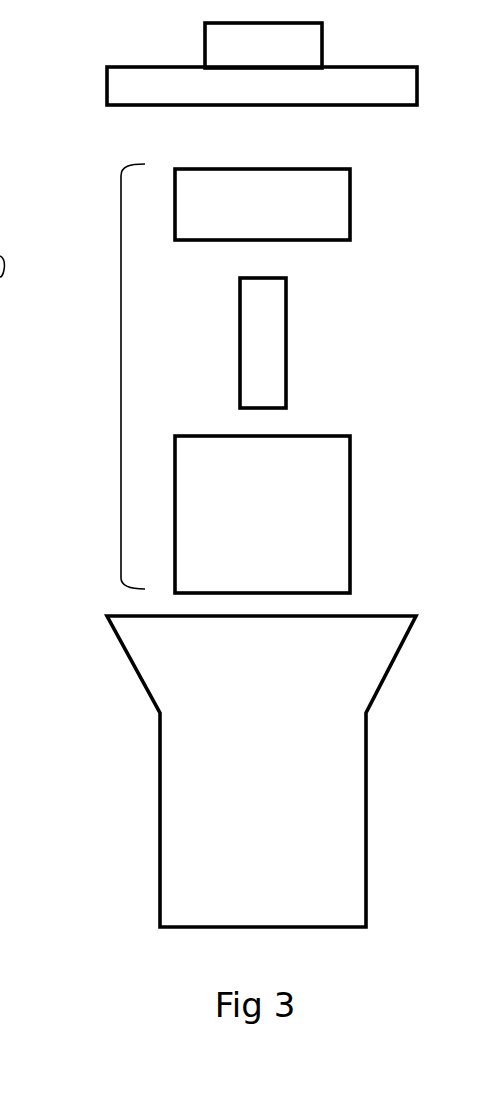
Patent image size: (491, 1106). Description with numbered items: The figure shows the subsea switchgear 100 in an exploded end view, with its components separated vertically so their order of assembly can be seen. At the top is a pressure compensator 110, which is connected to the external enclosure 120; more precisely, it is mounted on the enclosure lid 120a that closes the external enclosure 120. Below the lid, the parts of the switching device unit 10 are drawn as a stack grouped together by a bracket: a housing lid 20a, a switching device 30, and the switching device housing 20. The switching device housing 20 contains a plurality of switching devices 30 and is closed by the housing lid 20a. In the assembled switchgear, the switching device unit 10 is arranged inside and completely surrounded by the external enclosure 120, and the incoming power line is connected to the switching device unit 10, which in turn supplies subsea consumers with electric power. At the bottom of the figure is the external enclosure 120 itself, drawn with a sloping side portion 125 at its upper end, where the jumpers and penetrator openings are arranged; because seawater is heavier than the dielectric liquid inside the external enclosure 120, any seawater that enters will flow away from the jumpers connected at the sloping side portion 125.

The pressure compensator 110 is at (239, 58).
The external enclosure 120 is at (236, 803).
The enclosure lid 120a is at (0, 63).
The housing lid 20a is at (276, 215).
The switching device 30 is at (247, 353).
The switching device housing 20 is at (247, 527).
The switching device unit 10 is at (121, 378).
The sloping side portion 125 is at (123, 686).
The subsea switchgear 100 is at (2, 266).